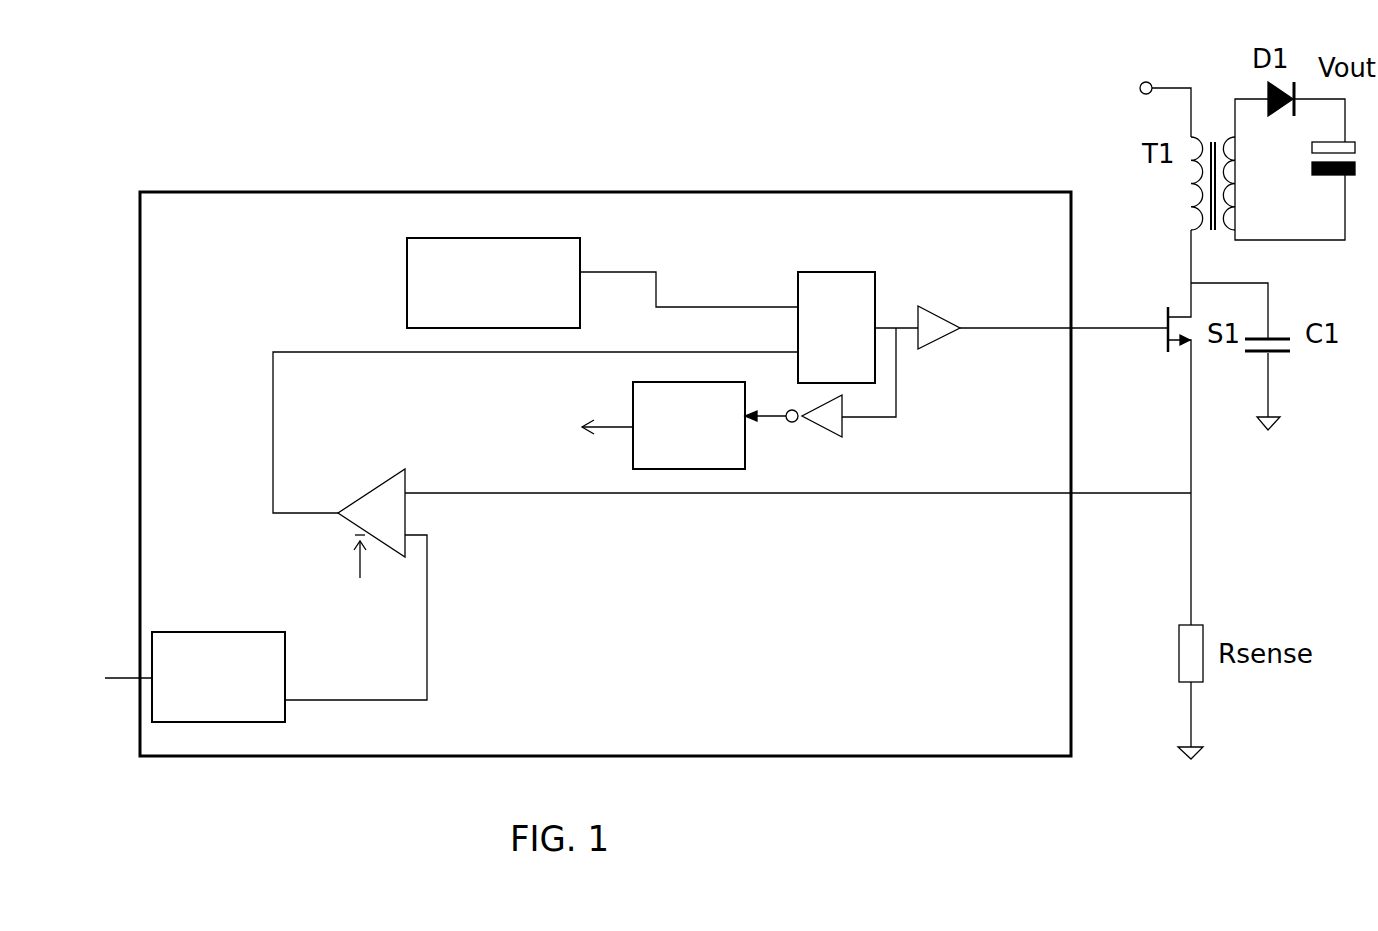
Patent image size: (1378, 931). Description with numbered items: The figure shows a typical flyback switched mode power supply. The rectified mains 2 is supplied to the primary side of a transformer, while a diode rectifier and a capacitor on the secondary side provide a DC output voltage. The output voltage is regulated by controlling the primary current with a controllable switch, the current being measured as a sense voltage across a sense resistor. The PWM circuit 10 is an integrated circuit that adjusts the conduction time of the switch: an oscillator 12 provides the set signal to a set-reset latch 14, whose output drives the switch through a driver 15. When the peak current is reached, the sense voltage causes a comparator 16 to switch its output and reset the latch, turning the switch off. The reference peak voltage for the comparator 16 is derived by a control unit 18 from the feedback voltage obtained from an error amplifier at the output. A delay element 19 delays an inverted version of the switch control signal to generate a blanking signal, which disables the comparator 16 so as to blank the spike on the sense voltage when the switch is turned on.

The PWM circuit 10 is at (457, 192).
The oscillator 12 is at (407, 292).
The set-reset latch 14 is at (798, 283).
The driver 15 is at (928, 318).
The comparator 16 is at (407, 503).
The control unit 18 is at (222, 632).
The delay element 19 is at (633, 444).
The rectified mains 2 is at (1140, 88).